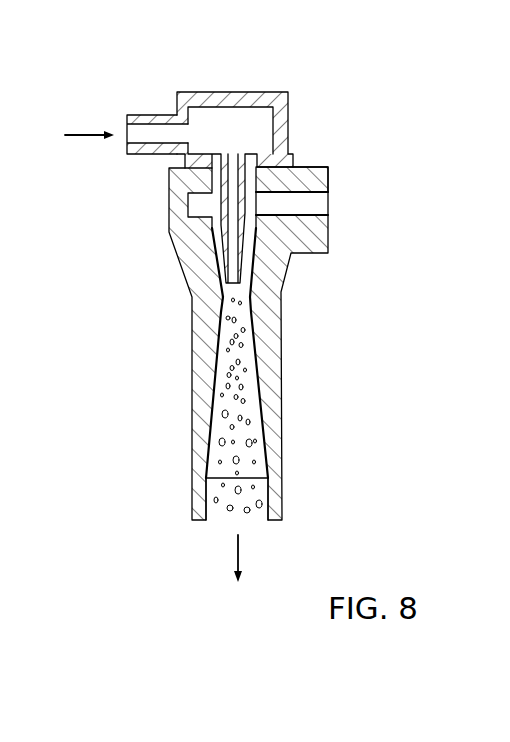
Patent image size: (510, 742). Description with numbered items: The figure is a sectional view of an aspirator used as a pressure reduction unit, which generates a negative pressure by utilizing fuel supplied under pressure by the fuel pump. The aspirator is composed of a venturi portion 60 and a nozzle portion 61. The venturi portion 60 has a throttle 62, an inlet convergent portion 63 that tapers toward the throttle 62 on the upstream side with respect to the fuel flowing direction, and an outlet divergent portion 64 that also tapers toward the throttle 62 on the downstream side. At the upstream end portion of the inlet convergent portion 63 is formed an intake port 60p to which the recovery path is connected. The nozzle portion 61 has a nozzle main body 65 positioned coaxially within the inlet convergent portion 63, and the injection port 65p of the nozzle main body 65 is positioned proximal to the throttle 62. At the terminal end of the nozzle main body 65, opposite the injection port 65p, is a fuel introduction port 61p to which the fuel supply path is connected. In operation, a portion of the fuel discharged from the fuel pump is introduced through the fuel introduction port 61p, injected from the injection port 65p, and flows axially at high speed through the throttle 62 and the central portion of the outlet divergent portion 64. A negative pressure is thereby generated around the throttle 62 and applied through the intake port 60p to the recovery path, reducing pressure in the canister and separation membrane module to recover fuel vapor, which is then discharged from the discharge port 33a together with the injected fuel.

The venturi portion 60 is at (292, 414).
The nozzle portion 61 is at (208, 84).
The fuel introduction port 61p is at (124, 133).
The nozzle main body 65 is at (284, 190).
The intake port 60p is at (302, 201).
The inlet convergent portion 63 is at (211, 259).
The throttle 62 is at (222, 325).
The injection port 65p is at (254, 318).
The outlet divergent portion 64 is at (213, 406).
The discharge port 33a is at (243, 523).